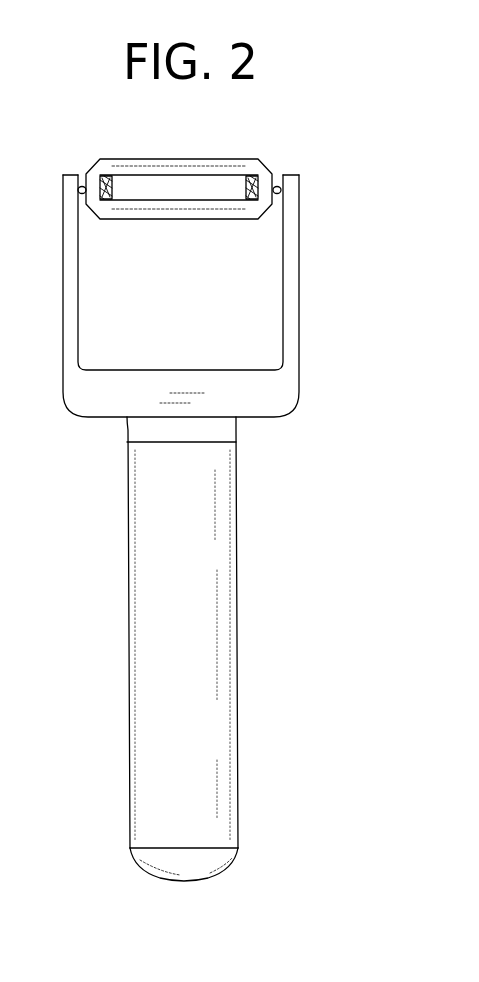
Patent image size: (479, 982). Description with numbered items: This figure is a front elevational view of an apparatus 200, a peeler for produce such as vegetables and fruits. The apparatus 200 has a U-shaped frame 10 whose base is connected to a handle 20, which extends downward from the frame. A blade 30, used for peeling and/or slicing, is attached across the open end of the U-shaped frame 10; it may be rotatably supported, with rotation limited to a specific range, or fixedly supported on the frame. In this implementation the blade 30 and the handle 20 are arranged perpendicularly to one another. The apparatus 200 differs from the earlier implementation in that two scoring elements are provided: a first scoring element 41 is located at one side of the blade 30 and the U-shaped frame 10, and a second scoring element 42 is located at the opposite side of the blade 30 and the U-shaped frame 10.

The apparatus 200 is at (361, 183).
The U-shaped frame 10 is at (283, 399).
The handle 20 is at (224, 714).
The blade 30 is at (266, 175).
The first scoring element 41 is at (108, 176).
The second scoring element 42 is at (243, 176).